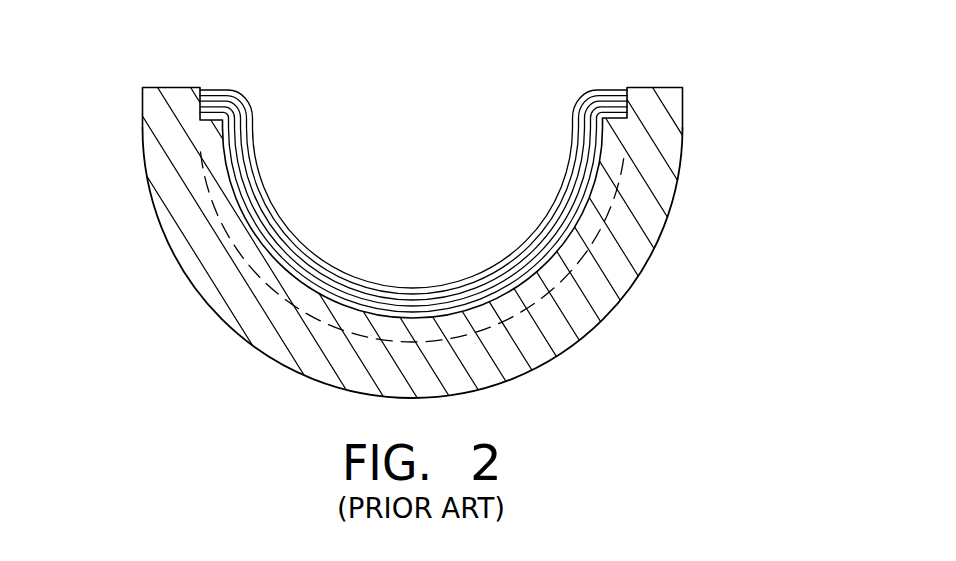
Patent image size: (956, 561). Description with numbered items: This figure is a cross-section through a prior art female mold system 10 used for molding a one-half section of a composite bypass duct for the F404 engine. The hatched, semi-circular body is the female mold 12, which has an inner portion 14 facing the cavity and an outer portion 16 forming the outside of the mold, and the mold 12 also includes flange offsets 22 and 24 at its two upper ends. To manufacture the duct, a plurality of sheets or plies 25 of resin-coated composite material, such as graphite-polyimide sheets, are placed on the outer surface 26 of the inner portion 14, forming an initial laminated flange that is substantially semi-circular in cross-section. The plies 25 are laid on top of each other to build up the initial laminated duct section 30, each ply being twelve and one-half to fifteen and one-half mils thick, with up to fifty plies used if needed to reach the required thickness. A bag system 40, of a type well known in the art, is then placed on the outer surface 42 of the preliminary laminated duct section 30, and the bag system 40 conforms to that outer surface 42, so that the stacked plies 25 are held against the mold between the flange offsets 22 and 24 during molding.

The female mold system 10 is at (712, 115).
The female mold 12 is at (655, 250).
The inner portion 14 is at (548, 249).
The outer portion 16 is at (468, 364).
The flange offset 22 is at (206, 124).
The flange offset 24 is at (627, 134).
The plies 25 is at (240, 178).
The outer surface of the inner portion 26 is at (325, 299).
The initial laminated duct section 30 is at (466, 279).
The bag system 40 is at (565, 162).
The outer surface of the preliminary duct section 42 is at (568, 193).